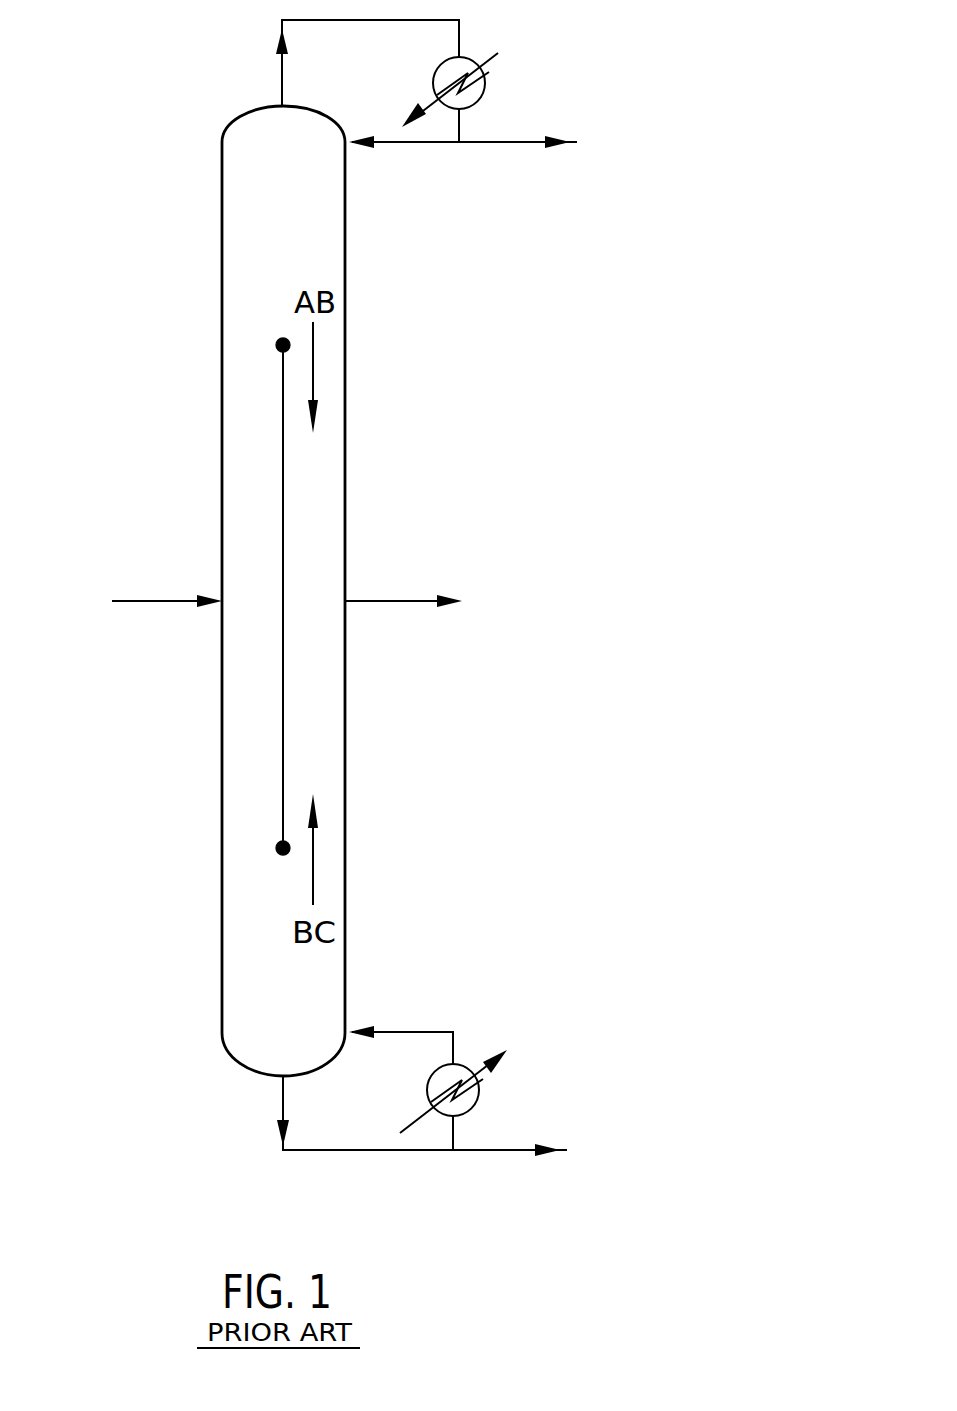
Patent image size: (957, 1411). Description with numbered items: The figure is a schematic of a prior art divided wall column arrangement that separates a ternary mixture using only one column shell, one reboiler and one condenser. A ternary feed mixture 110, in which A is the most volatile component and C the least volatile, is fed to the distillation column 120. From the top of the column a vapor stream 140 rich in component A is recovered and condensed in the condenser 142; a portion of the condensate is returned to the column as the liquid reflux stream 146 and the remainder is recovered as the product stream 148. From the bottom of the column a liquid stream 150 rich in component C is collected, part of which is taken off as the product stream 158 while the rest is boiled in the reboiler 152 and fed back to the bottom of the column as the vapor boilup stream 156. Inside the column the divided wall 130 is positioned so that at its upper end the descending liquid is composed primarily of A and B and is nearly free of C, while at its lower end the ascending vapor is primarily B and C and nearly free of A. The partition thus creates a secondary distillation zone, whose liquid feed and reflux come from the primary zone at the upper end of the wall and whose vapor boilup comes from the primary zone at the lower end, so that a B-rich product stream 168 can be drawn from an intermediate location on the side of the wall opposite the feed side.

The ternary feed mixture 110 is at (142, 601).
The distillation column 120 is at (345, 509).
The divided wall 130 is at (283, 762).
The vapor stream 140 is at (282, 75).
The condenser 142 is at (473, 57).
The liquid reflux stream 146 is at (425, 142).
The product stream 148 is at (510, 142).
The liquid stream 150 is at (280, 1112).
The reboiler 152 is at (480, 1108).
The vapor boilup stream 156 is at (403, 1032).
The product stream 158 is at (495, 1150).
The B-rich product stream 168 is at (388, 601).